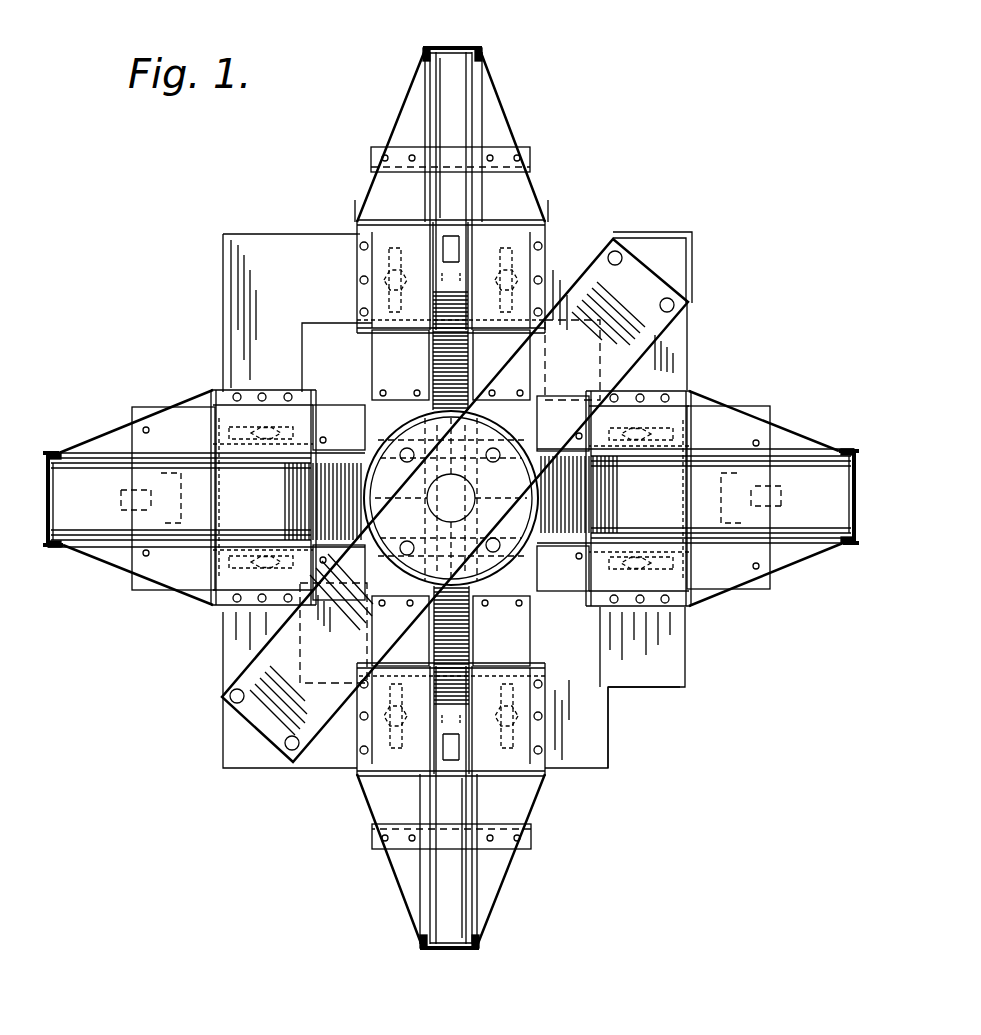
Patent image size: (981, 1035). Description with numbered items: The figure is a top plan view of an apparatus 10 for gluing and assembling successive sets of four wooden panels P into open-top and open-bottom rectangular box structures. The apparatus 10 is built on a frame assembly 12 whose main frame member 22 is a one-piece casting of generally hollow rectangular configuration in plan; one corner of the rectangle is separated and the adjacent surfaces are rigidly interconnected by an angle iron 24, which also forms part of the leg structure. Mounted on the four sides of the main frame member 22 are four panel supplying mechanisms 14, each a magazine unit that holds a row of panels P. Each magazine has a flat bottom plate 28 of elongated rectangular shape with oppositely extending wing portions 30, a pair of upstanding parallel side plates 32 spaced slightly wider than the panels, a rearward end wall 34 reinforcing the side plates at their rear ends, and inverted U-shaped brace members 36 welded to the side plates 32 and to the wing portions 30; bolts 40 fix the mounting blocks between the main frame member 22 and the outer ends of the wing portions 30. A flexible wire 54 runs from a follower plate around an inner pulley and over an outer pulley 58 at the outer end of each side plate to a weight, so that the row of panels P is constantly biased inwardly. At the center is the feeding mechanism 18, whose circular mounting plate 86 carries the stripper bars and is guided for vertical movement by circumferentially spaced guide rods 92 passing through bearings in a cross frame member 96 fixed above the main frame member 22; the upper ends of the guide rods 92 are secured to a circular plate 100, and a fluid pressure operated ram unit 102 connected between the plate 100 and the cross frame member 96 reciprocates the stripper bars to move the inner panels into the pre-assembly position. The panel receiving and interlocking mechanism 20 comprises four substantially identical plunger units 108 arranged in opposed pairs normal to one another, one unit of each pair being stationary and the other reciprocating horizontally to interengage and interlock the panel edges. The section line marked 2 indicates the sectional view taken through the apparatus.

The apparatus 10 is at (640, 160).
The frame assembly 12 is at (221, 240).
The panel supplying mechanism 14 is at (700, 385).
The feeding mechanism 18 is at (395, 420).
The panel receiving and interlocking mechanism 20 is at (608, 690).
The main frame member 22 is at (283, 245).
The angle iron 24 is at (608, 735).
The bottom plate 28 is at (445, 85).
The wing portion 30 is at (375, 186).
The side plate 32 is at (436, 115).
The rearward end wall 34 is at (462, 22).
The brace member 36 is at (392, 268).
The bolt 40 is at (548, 262).
The wire 54 is at (487, 203).
The outer pulley 58 is at (482, 50).
The mounting plate 86 is at (592, 640).
The guide rod 92 is at (498, 455).
The cross frame member 96 is at (578, 360).
The circular plate 100 is at (445, 585).
The ram unit 102 is at (451, 498).
The plunger unit 108 is at (365, 352).
The panel P is at (440, 358).
The section line 2 is at (68, 475).